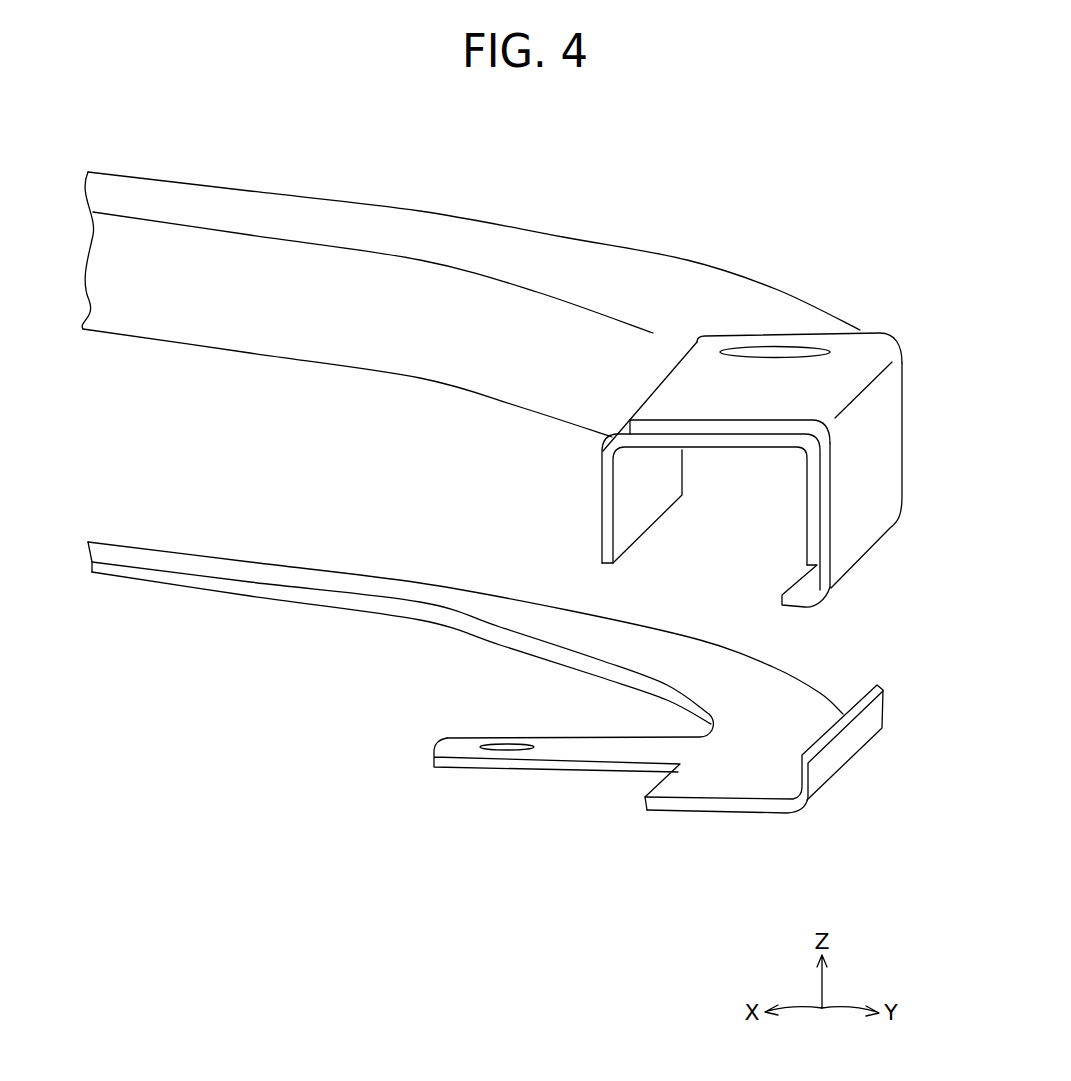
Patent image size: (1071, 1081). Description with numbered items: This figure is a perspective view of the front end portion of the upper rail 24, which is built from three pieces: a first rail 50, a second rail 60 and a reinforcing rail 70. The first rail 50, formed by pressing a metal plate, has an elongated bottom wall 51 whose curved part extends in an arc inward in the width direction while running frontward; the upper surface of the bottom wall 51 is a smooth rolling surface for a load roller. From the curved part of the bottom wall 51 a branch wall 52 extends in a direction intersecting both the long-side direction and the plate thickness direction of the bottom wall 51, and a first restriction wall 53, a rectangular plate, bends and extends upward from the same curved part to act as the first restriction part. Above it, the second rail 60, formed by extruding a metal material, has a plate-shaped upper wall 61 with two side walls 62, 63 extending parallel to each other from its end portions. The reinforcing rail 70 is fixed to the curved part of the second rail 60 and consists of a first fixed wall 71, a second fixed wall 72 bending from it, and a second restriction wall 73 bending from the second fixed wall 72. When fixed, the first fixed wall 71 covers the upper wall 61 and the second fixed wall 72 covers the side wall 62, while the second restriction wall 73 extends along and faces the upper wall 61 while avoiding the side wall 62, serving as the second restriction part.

The upper rail 24 is at (816, 201).
The second rail 60 is at (574, 231).
The upper wall 61 is at (665, 282).
The side wall 63 is at (347, 313).
The reinforcing rail 70 is at (911, 523).
The first fixed wall 71 is at (703, 393).
The second fixed wall 72 is at (873, 442).
The side wall 62 is at (807, 512).
The second restriction wall 73 is at (782, 595).
The first rail 50 is at (301, 610).
The bottom wall 51 is at (428, 590).
The branch wall 52 is at (434, 757).
The first restriction wall 53 is at (865, 720).